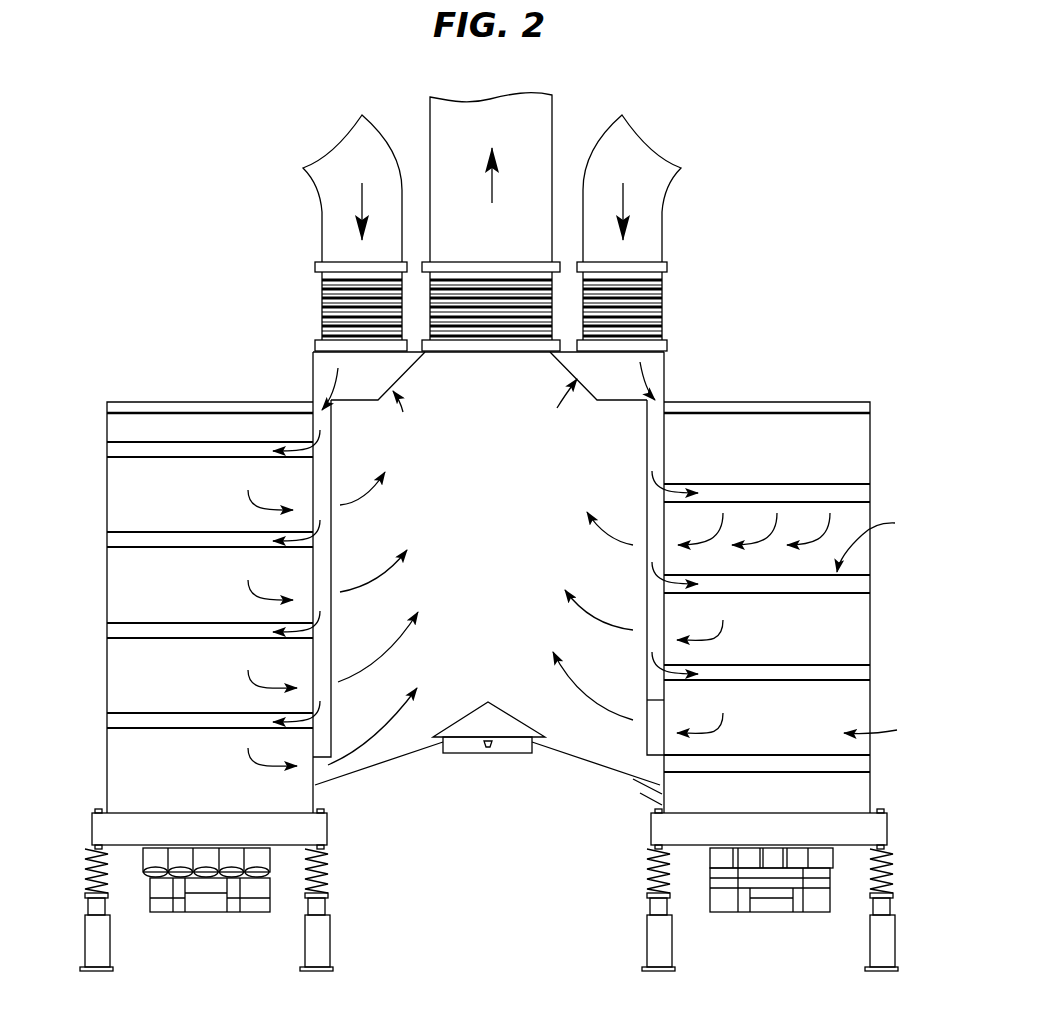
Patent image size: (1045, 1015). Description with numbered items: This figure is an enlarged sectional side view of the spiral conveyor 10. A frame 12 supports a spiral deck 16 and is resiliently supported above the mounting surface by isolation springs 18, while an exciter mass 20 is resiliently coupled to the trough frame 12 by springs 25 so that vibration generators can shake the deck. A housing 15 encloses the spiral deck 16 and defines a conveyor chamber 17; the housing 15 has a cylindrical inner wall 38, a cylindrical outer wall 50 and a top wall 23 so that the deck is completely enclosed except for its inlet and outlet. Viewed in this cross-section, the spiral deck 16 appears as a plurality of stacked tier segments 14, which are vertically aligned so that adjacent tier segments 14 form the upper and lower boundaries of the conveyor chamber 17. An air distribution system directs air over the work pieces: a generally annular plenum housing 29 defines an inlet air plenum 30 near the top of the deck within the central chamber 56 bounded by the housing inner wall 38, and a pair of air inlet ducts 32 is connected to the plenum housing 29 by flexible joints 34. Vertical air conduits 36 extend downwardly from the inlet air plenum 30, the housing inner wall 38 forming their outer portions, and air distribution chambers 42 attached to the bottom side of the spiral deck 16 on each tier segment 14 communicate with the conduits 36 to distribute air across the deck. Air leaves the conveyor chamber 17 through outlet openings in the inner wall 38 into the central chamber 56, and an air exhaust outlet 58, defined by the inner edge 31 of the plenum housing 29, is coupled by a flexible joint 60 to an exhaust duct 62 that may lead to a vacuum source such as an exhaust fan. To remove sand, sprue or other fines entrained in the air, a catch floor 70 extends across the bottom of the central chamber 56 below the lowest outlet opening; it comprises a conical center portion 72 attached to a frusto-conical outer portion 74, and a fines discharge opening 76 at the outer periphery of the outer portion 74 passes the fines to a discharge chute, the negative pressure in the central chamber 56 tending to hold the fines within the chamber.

The spiral conveyor 10 is at (794, 344).
The frame 12 is at (111, 827).
The tier segments 14 is at (794, 484).
The housing 15 is at (106, 672).
The spiral deck 16 is at (878, 540).
The conveyor chamber 17 is at (886, 729).
The springs 18 is at (85, 875).
The exciter mass 20 is at (158, 896).
The top wall 23 is at (184, 406).
The springs 25 is at (230, 858).
The plenum housing 29 is at (402, 415).
The inlet air plenum 30 is at (558, 407).
The inner edge 31 is at (422, 360).
The air inlet ducts 32 is at (333, 234).
The flexible joints 34 is at (333, 310).
The vertical air conduits 36 is at (330, 547).
The housing inner wall 38 is at (665, 706).
The air distribution chambers 42 is at (120, 447).
The housing outer wall 50 is at (872, 432).
The central chamber 56 is at (428, 484).
The air exhaust outlet 58 is at (552, 353).
The flexible joint 60 is at (523, 308).
The exhaust duct 62 is at (542, 125).
The catch floor 70 is at (391, 766).
The conical center portion 72 is at (505, 717).
The frusto-conical outer portion 74 is at (583, 760).
The fines discharge opening 76 is at (637, 788).